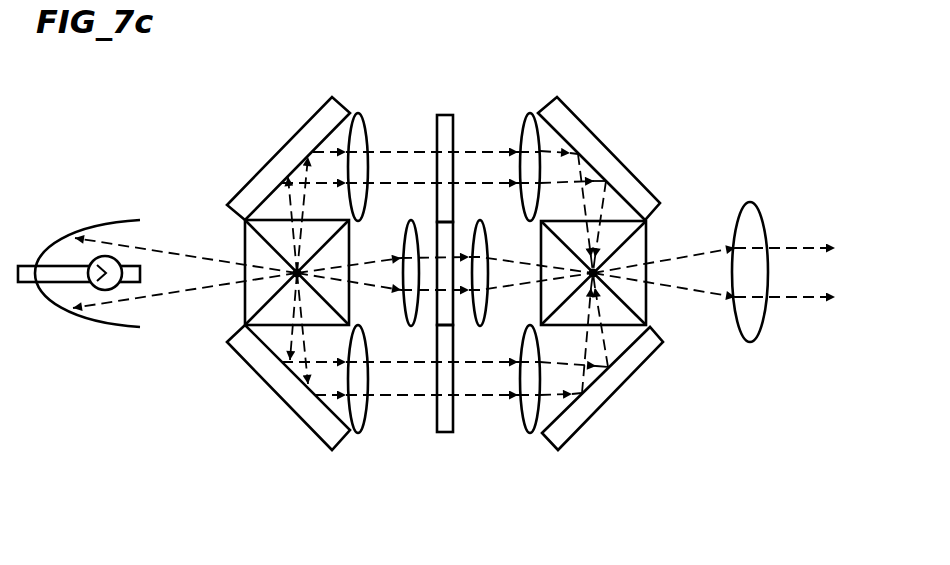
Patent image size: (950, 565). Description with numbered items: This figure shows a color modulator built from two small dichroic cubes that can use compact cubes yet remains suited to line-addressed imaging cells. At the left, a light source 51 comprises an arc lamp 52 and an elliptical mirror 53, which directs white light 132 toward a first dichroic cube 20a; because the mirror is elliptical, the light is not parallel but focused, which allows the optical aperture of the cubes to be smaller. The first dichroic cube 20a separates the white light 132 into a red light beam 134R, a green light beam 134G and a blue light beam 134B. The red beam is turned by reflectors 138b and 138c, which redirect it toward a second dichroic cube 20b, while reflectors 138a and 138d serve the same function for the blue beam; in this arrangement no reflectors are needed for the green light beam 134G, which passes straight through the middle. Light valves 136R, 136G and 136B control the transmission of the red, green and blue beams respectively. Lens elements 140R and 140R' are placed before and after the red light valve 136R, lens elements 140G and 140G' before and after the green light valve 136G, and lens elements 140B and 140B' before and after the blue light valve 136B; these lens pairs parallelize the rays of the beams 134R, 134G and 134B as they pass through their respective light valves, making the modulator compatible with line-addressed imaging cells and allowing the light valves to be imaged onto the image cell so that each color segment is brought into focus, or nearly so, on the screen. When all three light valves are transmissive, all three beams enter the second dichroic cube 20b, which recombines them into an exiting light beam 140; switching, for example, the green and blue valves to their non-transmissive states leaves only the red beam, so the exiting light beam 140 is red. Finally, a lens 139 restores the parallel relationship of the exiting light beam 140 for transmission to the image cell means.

The light source 51 is at (101, 213).
The arc lamp 52 is at (113, 292).
The elliptical mirror 53 is at (117, 333).
The white light 132 is at (180, 253).
The first dichroic cube 20a is at (247, 305).
The second dichroic cube 20b is at (647, 310).
The reflector 138a is at (293, 403).
The reflector 138b is at (282, 160).
The reflector 138c is at (622, 148).
The reflector 138d is at (583, 413).
The lens element 140R is at (338, 141).
The lens element 140B is at (345, 407).
The lens element 140G is at (400, 260).
The lens element 140G' is at (490, 260).
The lens element 140R' is at (527, 141).
The lens element 140B' is at (556, 429).
The red light valve 136R is at (433, 118).
The green light valve 136G is at (447, 313).
The blue light valve 136B is at (440, 422).
The red light beam 134R is at (487, 143).
The green light beam 134G is at (367, 283).
The blue light beam 134B is at (393, 400).
The lens 139 is at (753, 322).
The exiting light beam 140 is at (807, 233).